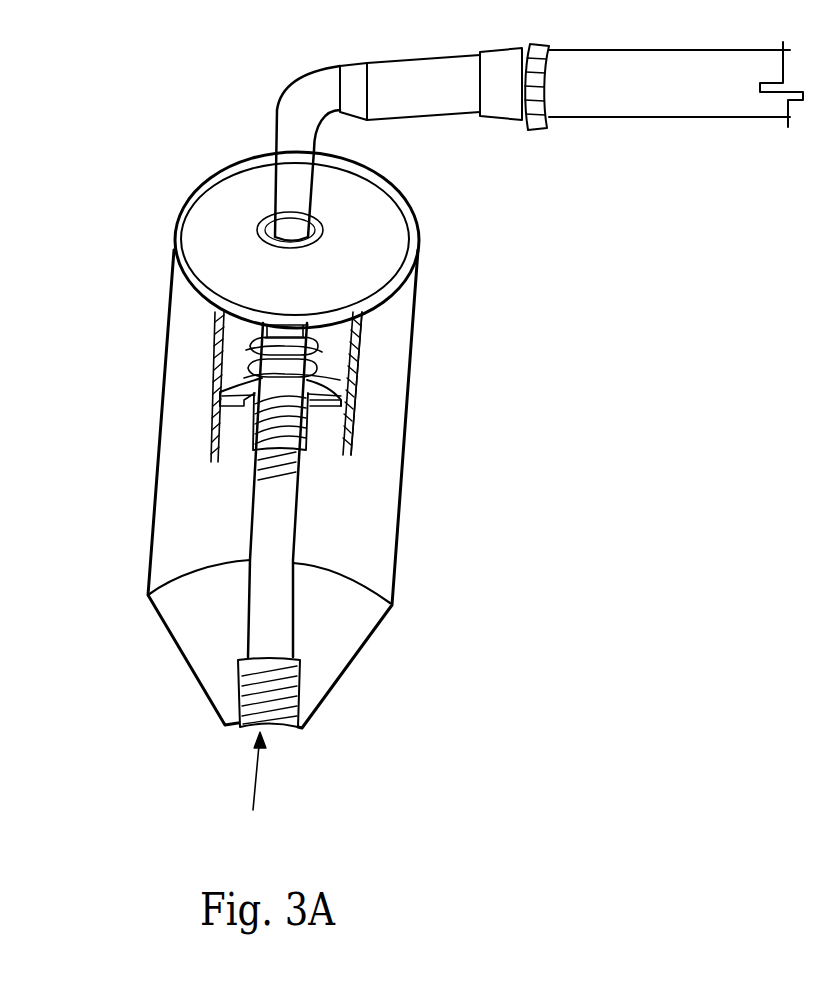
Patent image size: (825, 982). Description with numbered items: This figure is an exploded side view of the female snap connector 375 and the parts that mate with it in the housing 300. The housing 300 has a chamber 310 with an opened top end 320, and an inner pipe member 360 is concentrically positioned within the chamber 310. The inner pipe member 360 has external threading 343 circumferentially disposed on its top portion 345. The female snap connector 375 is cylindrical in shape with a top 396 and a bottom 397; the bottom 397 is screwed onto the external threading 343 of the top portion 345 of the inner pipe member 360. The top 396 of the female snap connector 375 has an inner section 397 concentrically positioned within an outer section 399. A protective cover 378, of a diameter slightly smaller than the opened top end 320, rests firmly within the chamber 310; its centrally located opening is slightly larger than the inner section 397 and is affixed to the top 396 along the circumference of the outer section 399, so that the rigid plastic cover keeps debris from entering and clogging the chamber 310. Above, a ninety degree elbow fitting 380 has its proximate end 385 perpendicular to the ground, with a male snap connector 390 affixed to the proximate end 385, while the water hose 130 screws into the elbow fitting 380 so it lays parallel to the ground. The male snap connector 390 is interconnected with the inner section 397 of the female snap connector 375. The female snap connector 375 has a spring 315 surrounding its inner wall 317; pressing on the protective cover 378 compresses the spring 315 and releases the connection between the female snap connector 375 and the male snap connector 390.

The water hose 130 is at (625, 117).
The housing 300 is at (248, 789).
The chamber 310 is at (178, 509).
The spring 315 is at (358, 345).
The inner wall 317 is at (310, 413).
The opened top end 320 is at (217, 167).
The external threading 343 is at (305, 478).
The top portion 345 is at (303, 465).
The inner pipe member 360 is at (297, 513).
The female snap connector 375 is at (358, 383).
The protective cover 378 is at (232, 207).
The 90 degree elbow fitting 380 is at (400, 103).
The proximate end 385 is at (258, 237).
The male snap connector 390 is at (225, 392).
The top 396 is at (322, 330).
The inner section 397 is at (312, 373).
The outer section 399 is at (320, 348).